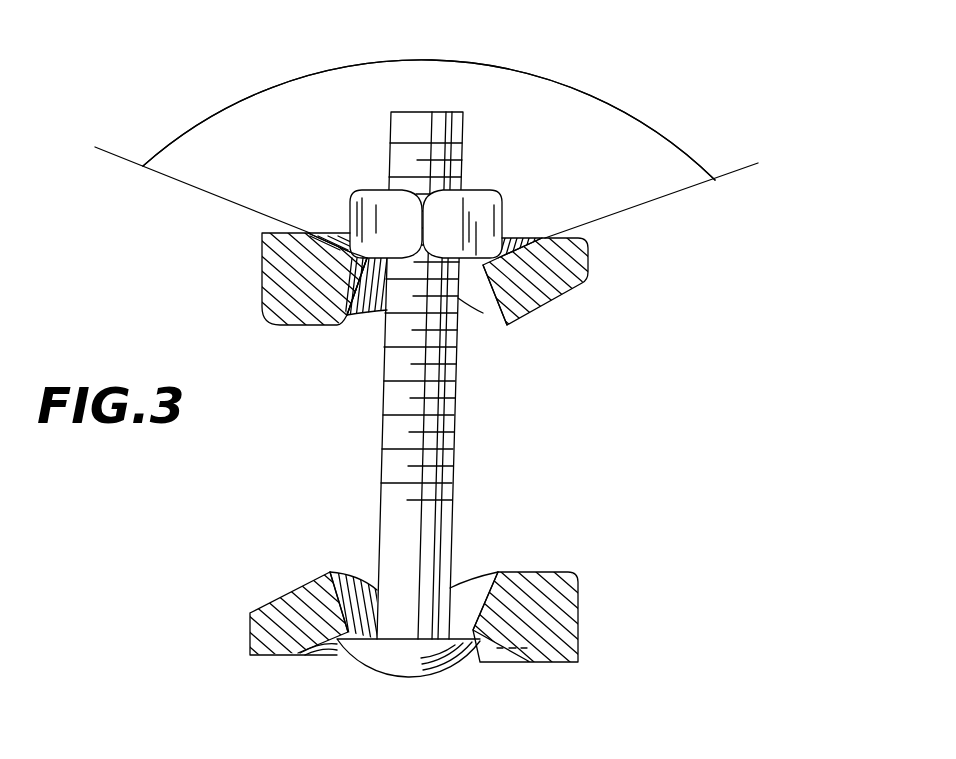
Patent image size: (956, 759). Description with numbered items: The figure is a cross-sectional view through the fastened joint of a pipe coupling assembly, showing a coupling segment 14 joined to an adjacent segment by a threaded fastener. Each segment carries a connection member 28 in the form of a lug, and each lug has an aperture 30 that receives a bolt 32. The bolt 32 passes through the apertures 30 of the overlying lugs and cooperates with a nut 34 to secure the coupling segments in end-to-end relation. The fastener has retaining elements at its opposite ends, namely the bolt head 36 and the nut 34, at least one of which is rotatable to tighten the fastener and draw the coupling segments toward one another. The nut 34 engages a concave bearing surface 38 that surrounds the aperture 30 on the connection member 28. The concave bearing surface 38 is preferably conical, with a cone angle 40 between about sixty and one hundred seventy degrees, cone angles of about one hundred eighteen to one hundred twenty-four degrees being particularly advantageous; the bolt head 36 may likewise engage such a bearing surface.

The coupling segment 14 is at (411, 0).
The cone angle 40 is at (503, 68).
The connection member 28 is at (262, 278).
The aperture 30 is at (475, 300).
The bolt 32 is at (440, 377).
The nut 34 is at (502, 198).
The bolt head 36 is at (345, 658).
The concave bearing surface 38 is at (317, 232).